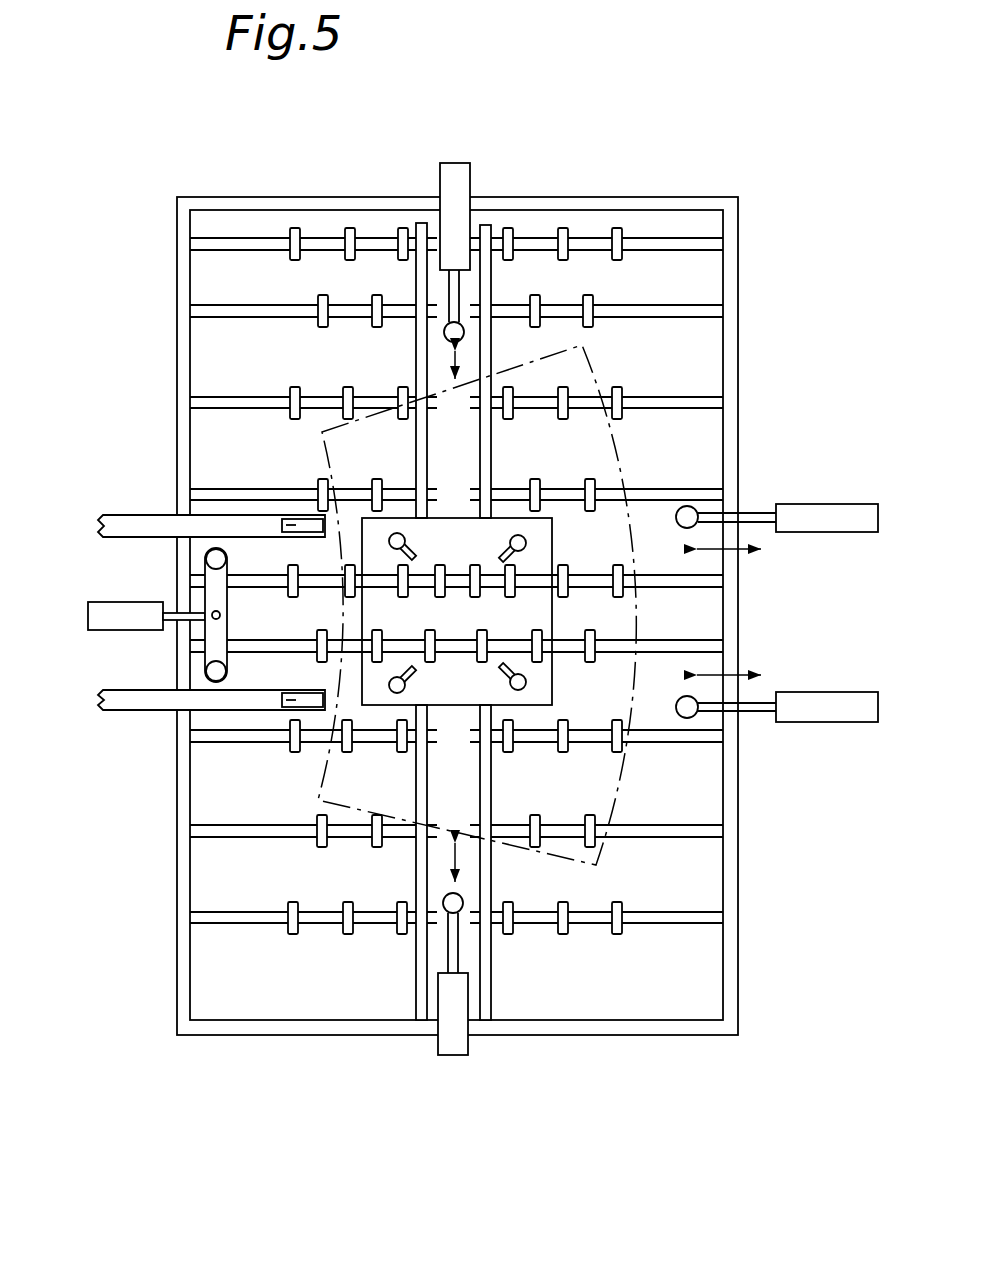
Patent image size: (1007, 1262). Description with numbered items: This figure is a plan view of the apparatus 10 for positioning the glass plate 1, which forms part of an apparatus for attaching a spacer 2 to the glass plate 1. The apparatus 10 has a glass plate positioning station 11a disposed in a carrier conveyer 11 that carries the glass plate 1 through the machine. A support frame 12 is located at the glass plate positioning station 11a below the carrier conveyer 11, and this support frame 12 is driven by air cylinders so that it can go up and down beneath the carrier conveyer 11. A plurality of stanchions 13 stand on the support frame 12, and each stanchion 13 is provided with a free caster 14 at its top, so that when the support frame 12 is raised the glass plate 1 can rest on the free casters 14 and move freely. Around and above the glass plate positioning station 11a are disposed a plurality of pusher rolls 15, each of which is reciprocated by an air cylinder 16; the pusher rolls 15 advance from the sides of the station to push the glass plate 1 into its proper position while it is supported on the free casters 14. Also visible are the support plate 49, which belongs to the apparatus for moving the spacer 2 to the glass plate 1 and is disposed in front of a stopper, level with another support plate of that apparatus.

The glass plate 1 is at (617, 445).
The spacer 2 is at (300, 520).
The apparatus for positioning the glass plate 10 is at (658, 471).
The carrier conveyer 11 is at (640, 380).
The glass plate positioning station 11a is at (601, 620).
The support frame 12 is at (453, 692).
The stanchions 13 is at (392, 682).
The free caster 14 is at (405, 668).
The pusher rolls 15 is at (446, 335).
The air cylinders 16 is at (460, 182).
The support plate 49 is at (140, 525).